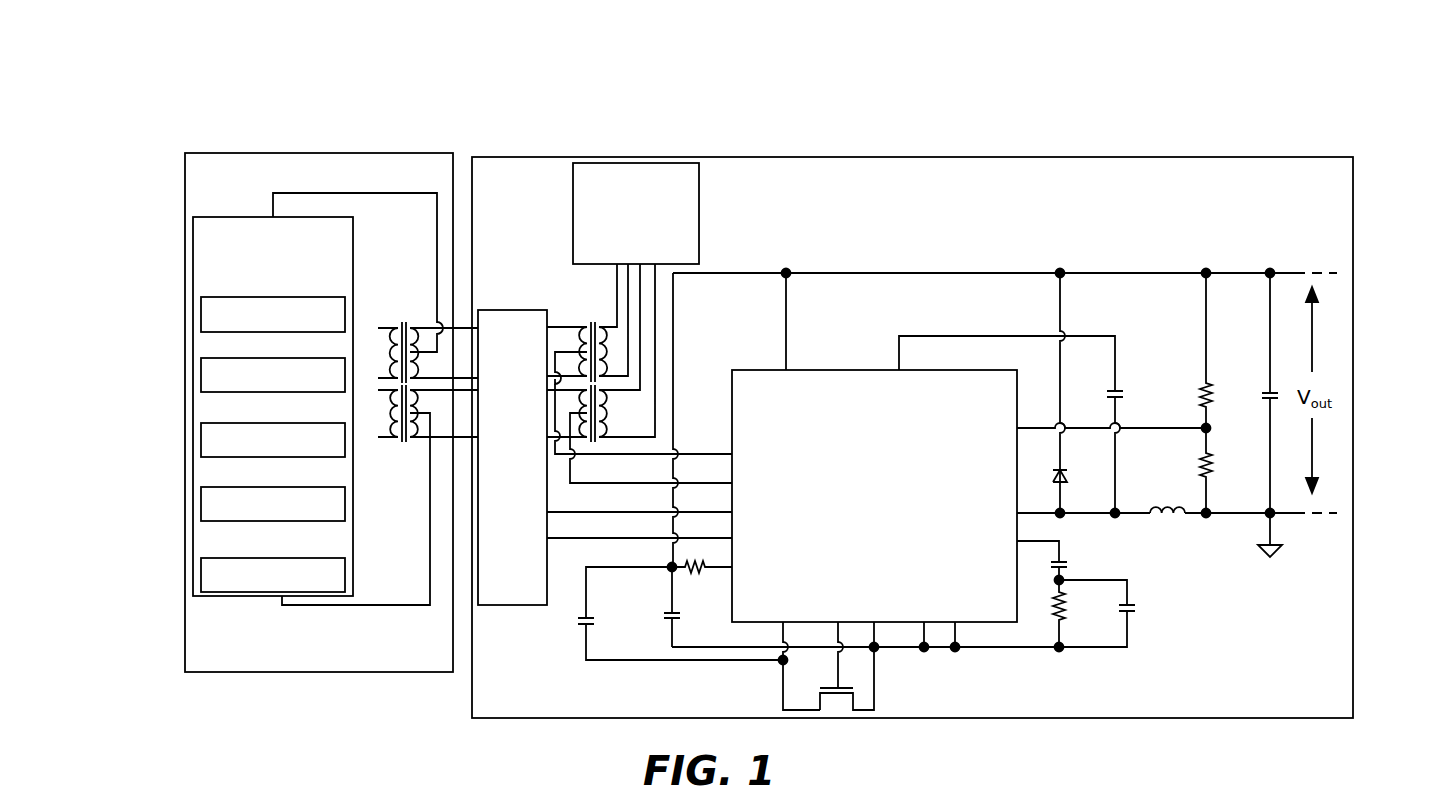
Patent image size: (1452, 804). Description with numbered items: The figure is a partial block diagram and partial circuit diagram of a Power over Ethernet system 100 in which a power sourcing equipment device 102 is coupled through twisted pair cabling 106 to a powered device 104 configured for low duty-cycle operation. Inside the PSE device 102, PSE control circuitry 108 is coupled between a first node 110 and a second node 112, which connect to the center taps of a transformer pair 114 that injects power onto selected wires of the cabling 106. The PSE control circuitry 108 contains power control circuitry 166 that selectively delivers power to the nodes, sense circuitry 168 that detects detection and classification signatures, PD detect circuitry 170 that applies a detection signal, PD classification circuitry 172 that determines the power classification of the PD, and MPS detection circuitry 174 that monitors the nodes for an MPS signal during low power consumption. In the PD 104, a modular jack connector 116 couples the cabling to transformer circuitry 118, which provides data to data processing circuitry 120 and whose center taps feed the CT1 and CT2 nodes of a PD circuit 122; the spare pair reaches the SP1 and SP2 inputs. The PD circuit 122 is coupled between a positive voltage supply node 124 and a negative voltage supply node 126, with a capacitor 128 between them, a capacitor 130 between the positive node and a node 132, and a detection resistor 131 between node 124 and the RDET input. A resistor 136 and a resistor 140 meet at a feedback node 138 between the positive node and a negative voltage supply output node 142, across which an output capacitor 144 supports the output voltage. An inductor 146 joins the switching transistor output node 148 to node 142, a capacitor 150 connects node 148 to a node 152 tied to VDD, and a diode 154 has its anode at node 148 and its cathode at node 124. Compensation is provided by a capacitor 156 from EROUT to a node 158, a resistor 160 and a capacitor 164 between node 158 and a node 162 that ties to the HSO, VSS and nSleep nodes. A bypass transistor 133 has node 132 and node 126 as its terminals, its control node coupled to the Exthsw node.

The POE system 100 is at (322, 37).
The PSE device 102 is at (319, 153).
The PD device 104 is at (656, 157).
The twisted pair cabling 106 is at (465, 152).
The PSE control circuitry 108 is at (248, 217).
The first node 110 is at (290, 193).
The second node 112 is at (360, 606).
The transformer pair 114 is at (403, 313).
The RJ-45 connector 116 is at (490, 310).
The transformer circuitry 118 is at (587, 313).
The data processing circuitry 120 is at (700, 197).
The PD circuit 122 is at (757, 370).
The positive voltage supply node 124 is at (740, 273).
The negative voltage supply node 126 is at (707, 660).
The capacitor 128 is at (582, 623).
The capacitor 130 is at (668, 615).
The detection resistor 131 is at (692, 575).
The node 132 is at (887, 648).
The bypass transistor 133 is at (845, 695).
The resistor 136 is at (1203, 398).
The feedback node 138 is at (1210, 430).
The resistor 140 is at (1200, 462).
The negative voltage supply output node 142 is at (1268, 510).
The output capacitor 144 is at (1268, 390).
The inductor 146 is at (1171, 528).
The switching transistor output node 148 is at (1117, 505).
The capacitor 150 is at (1117, 388).
The node 152 is at (948, 336).
The diode 154 is at (1062, 465).
The capacitor 156 is at (1063, 562).
The node 158 is at (1062, 578).
The resistor 160 is at (1065, 615).
The node 162 is at (1053, 651).
The capacitor 164 is at (1130, 612).
The power control circuitry 166 is at (258, 297).
The sense circuitry 168 is at (280, 358).
The PD detect circuitry 170 is at (270, 423).
The PD classification circuitry 172 is at (275, 487).
The MPS detection circuitry 174 is at (275, 558).